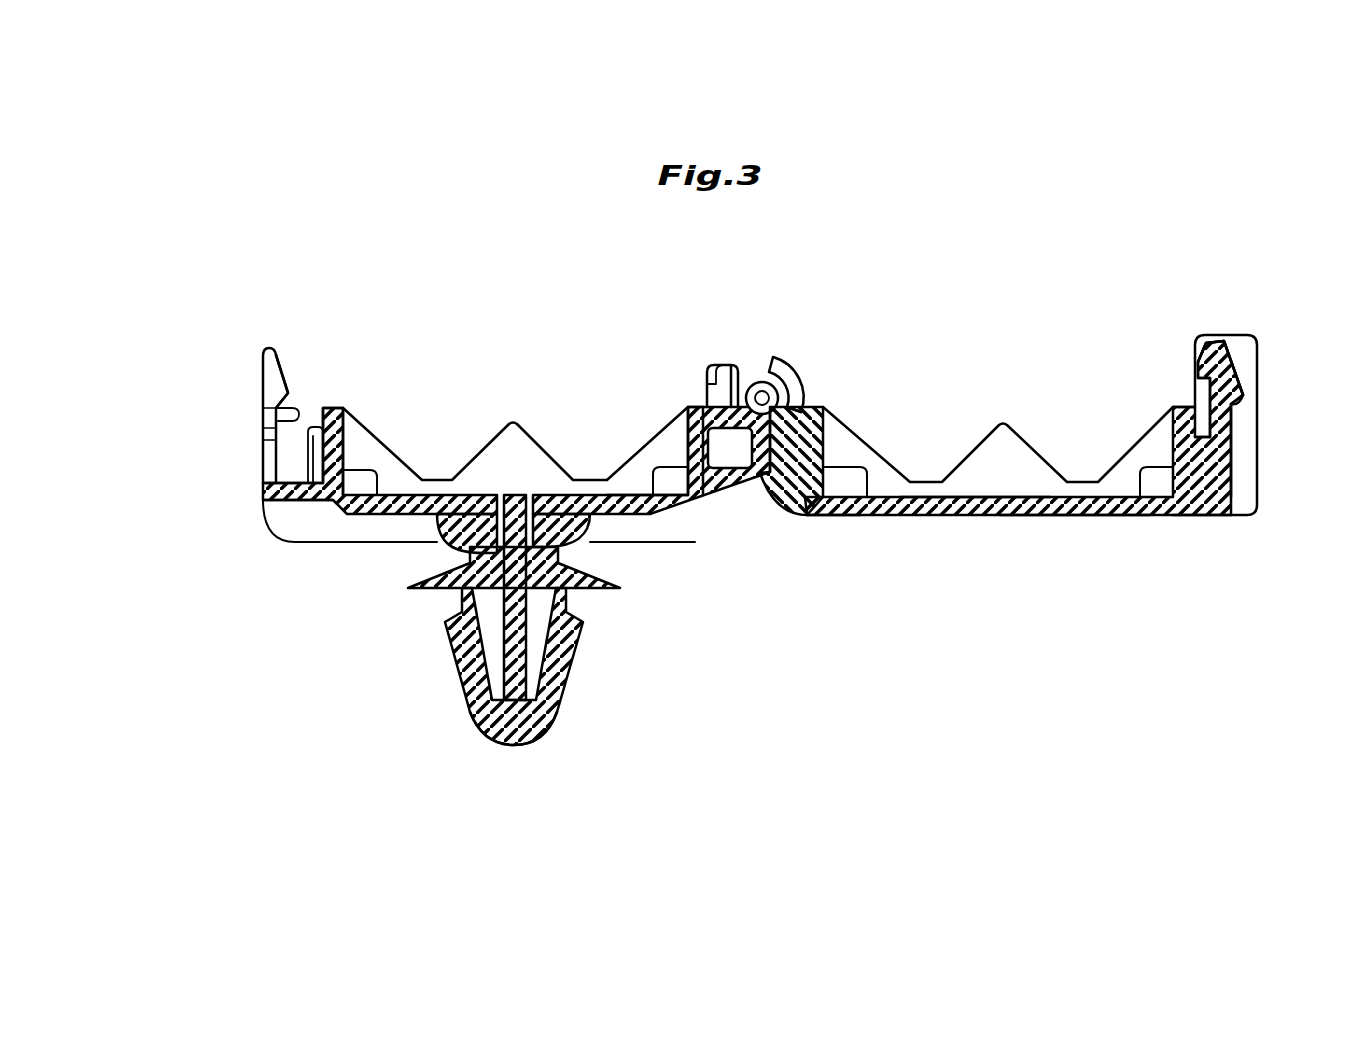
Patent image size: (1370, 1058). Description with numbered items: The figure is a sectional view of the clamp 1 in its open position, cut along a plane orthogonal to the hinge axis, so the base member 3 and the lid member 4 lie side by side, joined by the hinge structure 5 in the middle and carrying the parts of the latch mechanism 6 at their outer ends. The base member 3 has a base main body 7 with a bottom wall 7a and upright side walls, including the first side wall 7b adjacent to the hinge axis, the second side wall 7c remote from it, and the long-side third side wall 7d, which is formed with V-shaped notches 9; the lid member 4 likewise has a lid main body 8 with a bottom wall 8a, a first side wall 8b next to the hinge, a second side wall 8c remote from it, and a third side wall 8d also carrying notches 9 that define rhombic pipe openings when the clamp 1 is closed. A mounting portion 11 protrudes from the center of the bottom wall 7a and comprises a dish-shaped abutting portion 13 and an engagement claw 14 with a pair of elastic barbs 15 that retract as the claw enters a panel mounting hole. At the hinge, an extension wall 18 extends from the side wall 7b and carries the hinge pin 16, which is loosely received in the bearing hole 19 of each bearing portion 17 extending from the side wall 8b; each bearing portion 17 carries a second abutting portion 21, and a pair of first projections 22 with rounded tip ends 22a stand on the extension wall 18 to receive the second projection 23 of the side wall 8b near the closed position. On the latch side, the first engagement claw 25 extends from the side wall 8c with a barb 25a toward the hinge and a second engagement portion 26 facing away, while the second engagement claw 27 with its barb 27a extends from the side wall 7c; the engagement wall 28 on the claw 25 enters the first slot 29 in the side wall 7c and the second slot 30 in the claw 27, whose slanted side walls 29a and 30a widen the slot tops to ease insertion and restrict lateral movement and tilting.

The clamp 1 is at (1218, 226).
The base member 3 is at (272, 540).
The lid member 4 is at (1232, 520).
The hinge structure 5 is at (778, 308).
The latch mechanism 6 is at (257, 345).
The base main body 7 is at (418, 518).
The bottom wall 7a is at (390, 508).
The first side wall 7b is at (708, 476).
The second side wall 7c is at (333, 485).
The third side wall 7d is at (633, 479).
The lid main body 8 is at (1010, 518).
The bottom wall 8a is at (1068, 507).
The first side wall 8b is at (808, 512).
The second side wall 8c is at (1195, 482).
The third side wall 8d is at (978, 482).
The V-shaped notches 9 is at (493, 440).
The mounting portion 11 is at (477, 705).
The abutting portion 13 is at (440, 590).
The engagement claw 14 is at (513, 752).
The elastic barbs 15 is at (550, 677).
The hinge pin 16 is at (764, 393).
The bearing portions 17 is at (778, 372).
The extension wall 18 is at (722, 410).
The bearing hole 19 is at (806, 376).
The second abutting portion 21 is at (803, 388).
The first projections 22 is at (728, 392).
The tip end 22a is at (716, 385).
The second projection 23 is at (797, 446).
The first engagement claw 25 is at (1230, 429).
The barb 25a is at (1205, 358).
The second engagement portion 26 is at (1243, 413).
The second engagement claw 27 is at (258, 416).
The barb 27a is at (266, 350).
The engagement wall 28 is at (1247, 340).
The first slot 29 is at (318, 455).
The side walls 29a is at (318, 428).
The second slot 30 is at (268, 453).
The side walls 30a is at (278, 418).